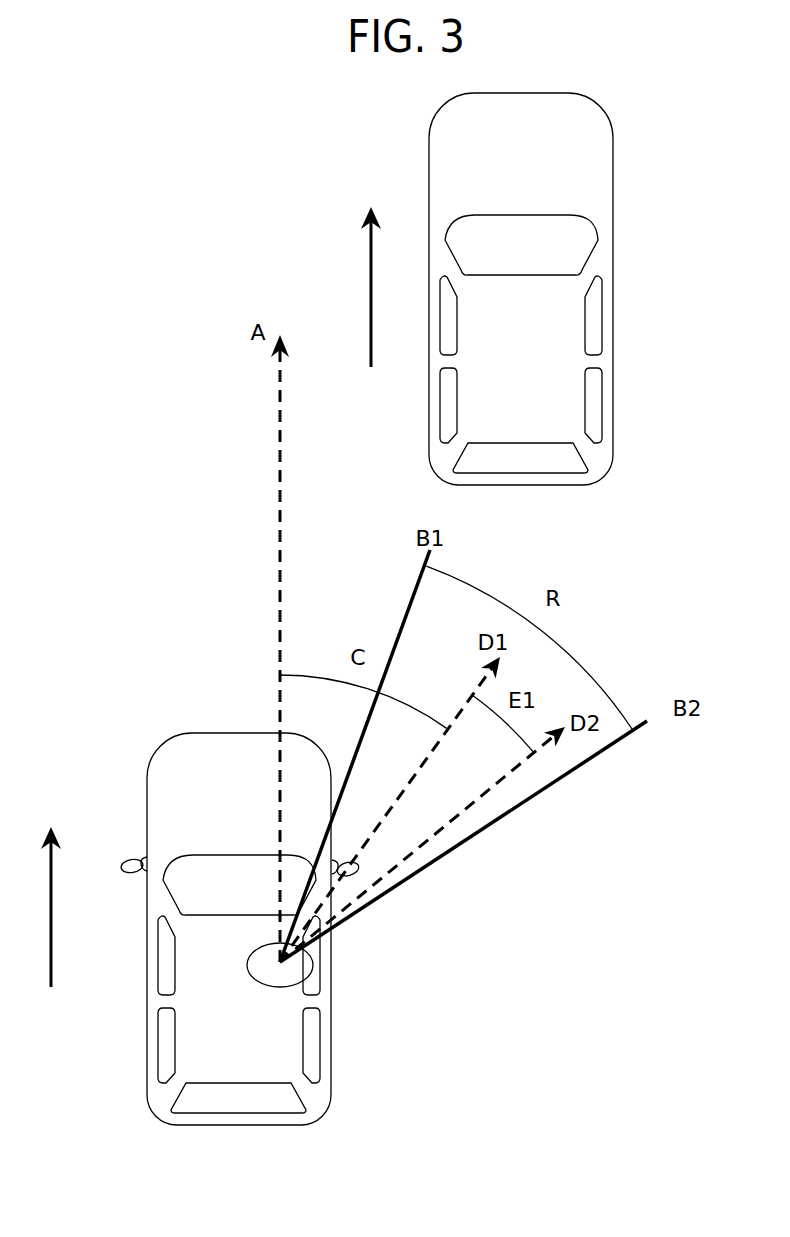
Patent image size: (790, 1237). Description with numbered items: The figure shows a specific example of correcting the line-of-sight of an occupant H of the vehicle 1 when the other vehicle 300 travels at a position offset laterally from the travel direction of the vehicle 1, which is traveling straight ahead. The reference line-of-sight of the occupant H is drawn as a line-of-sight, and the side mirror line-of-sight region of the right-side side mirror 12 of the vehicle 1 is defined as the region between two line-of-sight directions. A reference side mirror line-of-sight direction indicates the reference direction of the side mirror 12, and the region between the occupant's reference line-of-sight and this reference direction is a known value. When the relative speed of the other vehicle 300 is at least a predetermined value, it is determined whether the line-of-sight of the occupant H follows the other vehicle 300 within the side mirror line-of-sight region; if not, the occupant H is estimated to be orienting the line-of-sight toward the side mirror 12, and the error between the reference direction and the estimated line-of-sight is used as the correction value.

The vehicle 1 is at (250, 1123).
The side mirror 12 is at (128, 858).
The other vehicle 300 is at (540, 92).
The occupant H is at (273, 983).